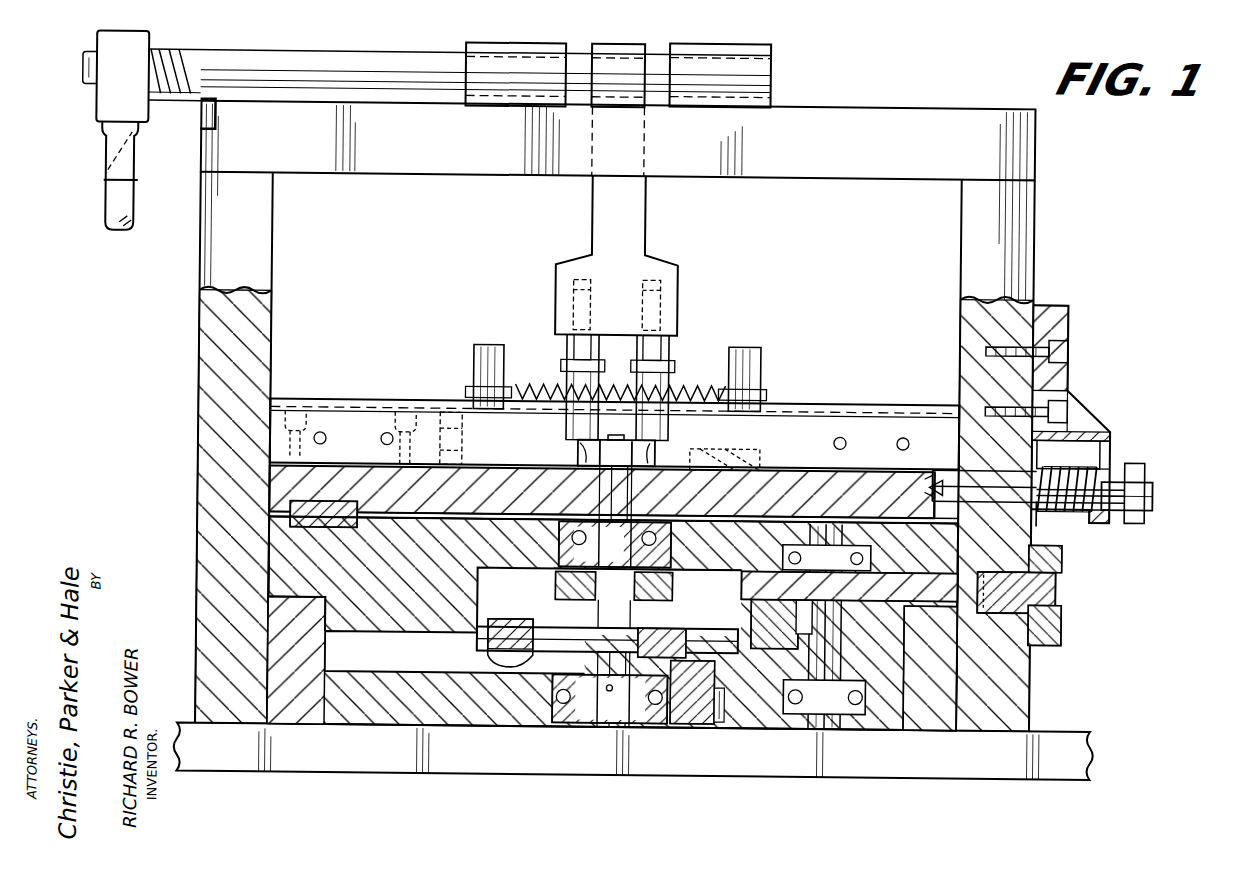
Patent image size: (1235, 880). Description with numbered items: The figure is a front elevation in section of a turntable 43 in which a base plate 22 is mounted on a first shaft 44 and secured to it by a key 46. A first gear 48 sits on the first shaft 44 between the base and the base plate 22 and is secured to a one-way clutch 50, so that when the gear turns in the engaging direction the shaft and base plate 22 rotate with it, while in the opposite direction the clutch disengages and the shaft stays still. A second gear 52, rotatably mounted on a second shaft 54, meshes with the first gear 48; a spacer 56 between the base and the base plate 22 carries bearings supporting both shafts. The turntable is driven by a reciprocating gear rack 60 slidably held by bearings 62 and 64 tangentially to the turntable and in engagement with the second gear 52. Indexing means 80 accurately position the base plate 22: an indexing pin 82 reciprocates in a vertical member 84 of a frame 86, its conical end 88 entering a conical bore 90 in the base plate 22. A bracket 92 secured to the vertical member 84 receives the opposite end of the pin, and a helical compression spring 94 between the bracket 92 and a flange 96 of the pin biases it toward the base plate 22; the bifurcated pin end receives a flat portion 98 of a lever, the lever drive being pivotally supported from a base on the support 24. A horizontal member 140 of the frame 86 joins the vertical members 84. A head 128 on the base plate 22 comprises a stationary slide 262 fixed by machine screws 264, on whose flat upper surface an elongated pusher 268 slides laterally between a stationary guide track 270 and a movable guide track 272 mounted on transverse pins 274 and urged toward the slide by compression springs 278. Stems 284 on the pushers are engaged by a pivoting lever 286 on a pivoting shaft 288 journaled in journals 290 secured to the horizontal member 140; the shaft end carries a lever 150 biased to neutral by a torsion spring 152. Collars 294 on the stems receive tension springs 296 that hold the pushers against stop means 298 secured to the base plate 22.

The base plate 22 is at (283, 489).
The support 24 is at (720, 760).
The turntable 43 is at (357, 754).
The first shaft 44 is at (624, 735).
The key 46 is at (640, 490).
The first gear 48 is at (557, 585).
The one-way clutch 50 is at (490, 634).
The second gear 52 is at (700, 588).
The second shaft 54 is at (828, 735).
The spacer 56 is at (272, 568).
The gear rack 60 is at (1057, 591).
The bearing 62 is at (1063, 628).
The bearing 64 is at (1063, 564).
The indexing means 80 is at (1114, 417).
The indexing pin 82 is at (993, 496).
The vertical member 84 is at (1032, 228).
The frame 86 is at (1056, 180).
The conical end 88 is at (940, 490).
The conical bore 90 is at (938, 477).
The bracket 92 is at (1076, 396).
The helical compression spring 94 is at (1070, 507).
The flange 96 is at (1048, 452).
The flat portion 98 is at (1153, 486).
The head 128 is at (756, 287).
The horizontal member 140 is at (879, 114).
The lever 150 is at (91, 120).
The torsion spring 152 is at (102, 191).
The stationary slide 262 is at (346, 412).
The machine screws 264 is at (408, 422).
The pusher 268 is at (560, 372).
The stationary guide track 270 is at (615, 390).
The movable guide track 272 is at (545, 372).
The transverse pins 274 is at (455, 402).
The compression springs 278 is at (740, 466).
The stems 284 is at (760, 352).
The pivoting lever 286 is at (649, 268).
The pivoting shaft 288 is at (295, 61).
The journals 290 is at (462, 51).
The collars 294 is at (683, 360).
The tension springs 296 is at (514, 386).
The stop means 298 is at (613, 494).